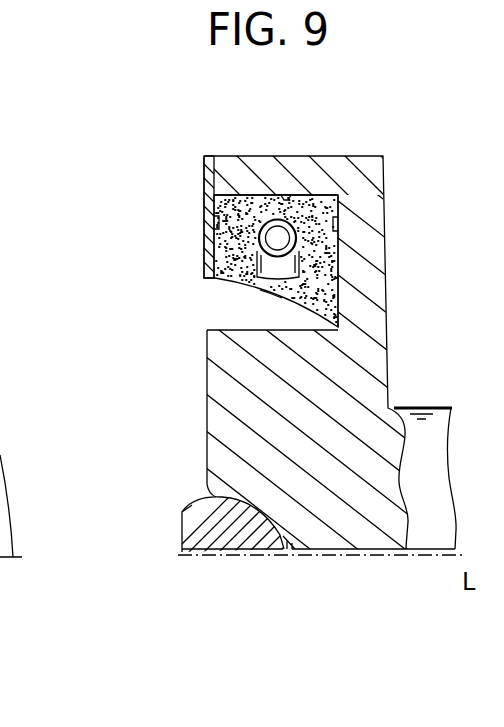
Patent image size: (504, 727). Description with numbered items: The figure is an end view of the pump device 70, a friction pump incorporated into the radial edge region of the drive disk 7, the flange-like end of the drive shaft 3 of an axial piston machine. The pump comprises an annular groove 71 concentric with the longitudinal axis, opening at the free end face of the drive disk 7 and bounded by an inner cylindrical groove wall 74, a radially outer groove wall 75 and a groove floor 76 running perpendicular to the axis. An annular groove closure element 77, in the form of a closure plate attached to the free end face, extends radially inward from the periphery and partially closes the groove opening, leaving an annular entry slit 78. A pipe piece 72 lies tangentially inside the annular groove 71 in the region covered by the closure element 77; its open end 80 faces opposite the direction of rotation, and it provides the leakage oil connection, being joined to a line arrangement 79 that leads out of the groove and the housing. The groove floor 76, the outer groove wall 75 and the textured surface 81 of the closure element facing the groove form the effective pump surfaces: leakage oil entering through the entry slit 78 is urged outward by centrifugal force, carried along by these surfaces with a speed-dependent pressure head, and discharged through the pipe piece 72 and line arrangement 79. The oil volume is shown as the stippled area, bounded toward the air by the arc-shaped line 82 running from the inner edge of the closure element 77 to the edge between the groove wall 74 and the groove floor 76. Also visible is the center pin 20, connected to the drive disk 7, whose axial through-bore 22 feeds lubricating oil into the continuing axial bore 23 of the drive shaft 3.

The drive shaft 3 is at (432, 440).
The drive disk 7 is at (372, 342).
The center pin 20 is at (195, 501).
The axial through-bore 22 is at (223, 552).
The axial bore 23 is at (418, 553).
The pump device 70 is at (143, 198).
The annular groove 71 is at (312, 198).
The pipe piece 72 is at (297, 240).
The cylindrical groove wall 74 is at (270, 322).
The radially outer groove wall 75 is at (286, 197).
The groove floor 76 is at (338, 218).
The annular groove closure element 77 is at (204, 176).
The annular entry slit 78 is at (197, 307).
The line arrangement 79 is at (258, 268).
The open end 80 is at (274, 234).
The surface 81 is at (204, 221).
The line 82 is at (280, 292).